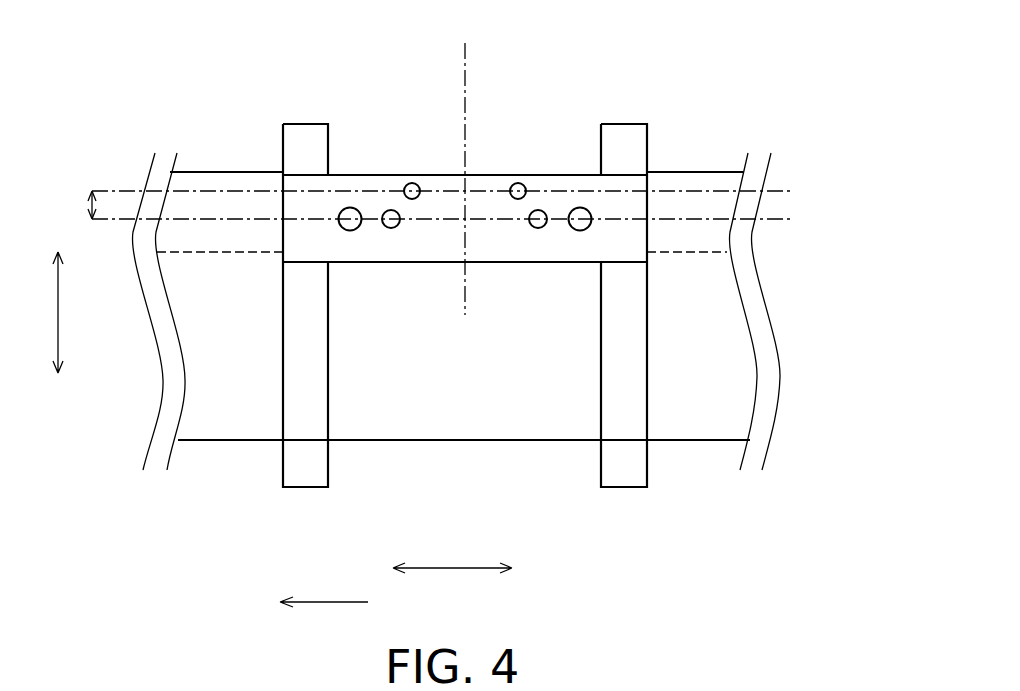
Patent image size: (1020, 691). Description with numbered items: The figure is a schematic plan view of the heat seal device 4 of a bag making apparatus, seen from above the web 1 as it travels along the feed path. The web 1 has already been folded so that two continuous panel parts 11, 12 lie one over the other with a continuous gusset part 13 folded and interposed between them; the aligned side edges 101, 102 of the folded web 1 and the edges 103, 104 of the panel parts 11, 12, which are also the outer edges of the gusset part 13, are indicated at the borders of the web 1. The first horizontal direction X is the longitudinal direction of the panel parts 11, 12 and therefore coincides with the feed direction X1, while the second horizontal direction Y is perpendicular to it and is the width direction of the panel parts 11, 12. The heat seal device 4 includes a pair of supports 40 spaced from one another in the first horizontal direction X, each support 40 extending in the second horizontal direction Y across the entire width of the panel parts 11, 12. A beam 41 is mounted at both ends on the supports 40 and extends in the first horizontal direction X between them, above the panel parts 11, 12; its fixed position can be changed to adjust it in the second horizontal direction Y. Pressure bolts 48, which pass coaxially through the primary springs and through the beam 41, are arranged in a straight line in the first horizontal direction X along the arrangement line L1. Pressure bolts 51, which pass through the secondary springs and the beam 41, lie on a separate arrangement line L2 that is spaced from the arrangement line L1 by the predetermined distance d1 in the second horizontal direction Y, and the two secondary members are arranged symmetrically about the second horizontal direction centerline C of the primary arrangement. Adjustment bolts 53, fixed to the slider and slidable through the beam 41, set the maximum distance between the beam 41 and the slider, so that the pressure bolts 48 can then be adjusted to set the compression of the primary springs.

The heat seal device 4 is at (609, 61).
The web 1 is at (703, 427).
The panel part 11 is at (442, 402).
The panel part 12 is at (483, 402).
The gusset part 13 is at (220, 182).
The support 40 is at (308, 468).
The beam 41 is at (450, 177).
The pressure bolt 48 is at (347, 208).
The pressure bolt 51 is at (413, 183).
The adjustment bolt 53 is at (390, 210).
The side edge 101 is at (207, 369).
The side edge 102 is at (215, 442).
The edge of panel part 103 is at (701, 158).
The edge of panel part 104 is at (688, 172).
The second horizontal direction centerline C is at (463, 58).
The arrangement line L1 is at (105, 222).
The arrangement line L2 is at (127, 187).
The predetermined distance d1 is at (72, 205).
The first horizontal direction X is at (452, 583).
The feed direction X1 is at (324, 616).
The second horizontal direction Y is at (66, 312).